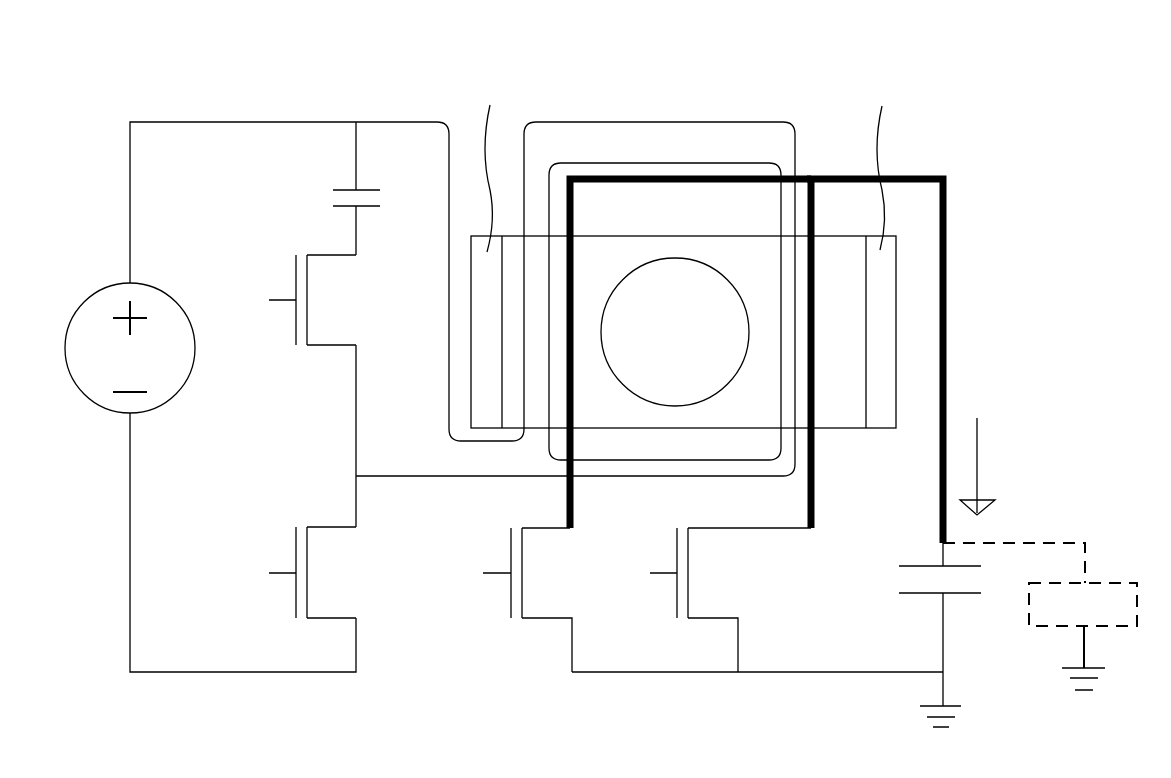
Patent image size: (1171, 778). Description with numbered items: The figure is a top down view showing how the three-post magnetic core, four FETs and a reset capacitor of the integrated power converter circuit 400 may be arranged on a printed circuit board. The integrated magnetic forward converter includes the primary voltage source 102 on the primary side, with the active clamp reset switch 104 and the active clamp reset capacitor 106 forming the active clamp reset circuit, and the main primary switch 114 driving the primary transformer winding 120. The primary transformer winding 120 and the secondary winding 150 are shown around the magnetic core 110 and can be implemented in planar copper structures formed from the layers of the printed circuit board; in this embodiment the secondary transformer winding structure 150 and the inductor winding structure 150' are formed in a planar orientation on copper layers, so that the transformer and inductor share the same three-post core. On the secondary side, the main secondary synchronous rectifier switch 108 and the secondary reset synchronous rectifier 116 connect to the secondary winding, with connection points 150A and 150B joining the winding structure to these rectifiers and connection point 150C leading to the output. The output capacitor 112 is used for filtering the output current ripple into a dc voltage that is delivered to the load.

The power converter circuit 400 is at (110, 46).
The primary voltage source 102 is at (95, 297).
The active clamp reset switch 104 is at (298, 247).
The active clamp reset capacitor 106 is at (329, 196).
The main secondary synchronous rectifier switch 108 is at (663, 560).
The magnetic core 110 is at (606, 232).
The output capacitor 112 is at (918, 600).
The main primary switch 114 is at (298, 522).
The secondary reset synchronous rectifier 116 is at (495, 553).
The primary transformer winding 120 is at (548, 458).
The secondary winding 150 is at (690, 294).
The inductor winding structure 150' is at (913, 361).
The winding connection to transistor 116 150A is at (540, 538).
The winding connection to transistor 108 150B is at (712, 538).
The winding connection to output 150C is at (935, 542).